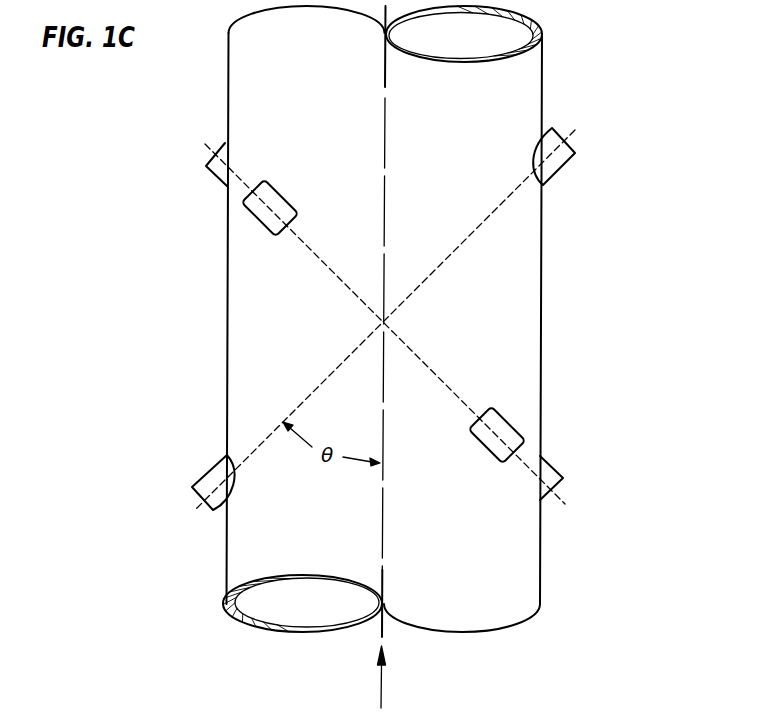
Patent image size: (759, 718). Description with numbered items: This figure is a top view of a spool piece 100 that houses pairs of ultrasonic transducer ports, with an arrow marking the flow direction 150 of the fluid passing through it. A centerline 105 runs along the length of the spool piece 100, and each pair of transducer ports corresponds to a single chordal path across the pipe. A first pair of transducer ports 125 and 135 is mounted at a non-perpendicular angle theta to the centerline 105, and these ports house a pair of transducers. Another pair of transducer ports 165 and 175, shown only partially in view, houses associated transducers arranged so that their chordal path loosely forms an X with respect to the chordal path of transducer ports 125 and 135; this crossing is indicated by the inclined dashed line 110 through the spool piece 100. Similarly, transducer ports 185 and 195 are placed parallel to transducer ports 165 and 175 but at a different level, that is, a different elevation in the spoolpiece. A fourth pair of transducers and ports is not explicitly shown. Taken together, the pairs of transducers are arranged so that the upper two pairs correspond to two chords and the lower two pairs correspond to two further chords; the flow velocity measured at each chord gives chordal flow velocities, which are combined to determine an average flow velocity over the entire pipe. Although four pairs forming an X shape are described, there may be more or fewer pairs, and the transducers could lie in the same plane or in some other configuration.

The spool piece 100 is at (543, 50).
The centerline 105 is at (385, 100).
The inclined axis line 110 is at (433, 273).
The transducer port 125 is at (563, 165).
The transducer port 135 is at (215, 462).
The flow direction 150 is at (382, 687).
The transducer port 165 is at (216, 178).
The transducer port 175 is at (550, 462).
The transducer port 185 is at (277, 182).
The transducer port 195 is at (483, 448).